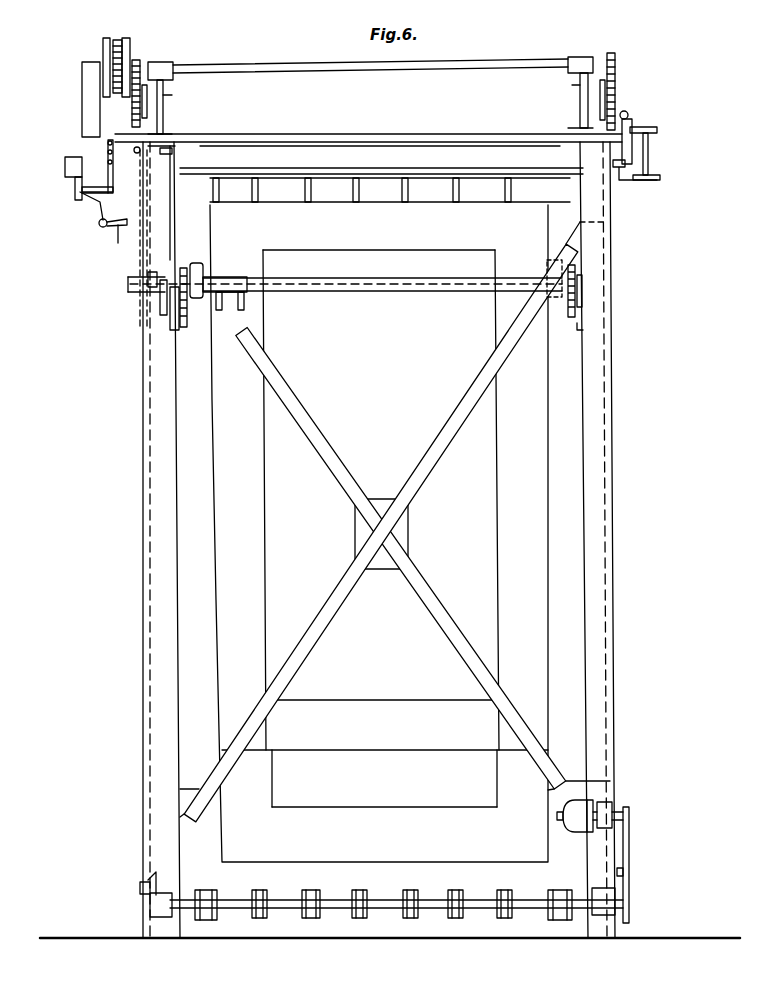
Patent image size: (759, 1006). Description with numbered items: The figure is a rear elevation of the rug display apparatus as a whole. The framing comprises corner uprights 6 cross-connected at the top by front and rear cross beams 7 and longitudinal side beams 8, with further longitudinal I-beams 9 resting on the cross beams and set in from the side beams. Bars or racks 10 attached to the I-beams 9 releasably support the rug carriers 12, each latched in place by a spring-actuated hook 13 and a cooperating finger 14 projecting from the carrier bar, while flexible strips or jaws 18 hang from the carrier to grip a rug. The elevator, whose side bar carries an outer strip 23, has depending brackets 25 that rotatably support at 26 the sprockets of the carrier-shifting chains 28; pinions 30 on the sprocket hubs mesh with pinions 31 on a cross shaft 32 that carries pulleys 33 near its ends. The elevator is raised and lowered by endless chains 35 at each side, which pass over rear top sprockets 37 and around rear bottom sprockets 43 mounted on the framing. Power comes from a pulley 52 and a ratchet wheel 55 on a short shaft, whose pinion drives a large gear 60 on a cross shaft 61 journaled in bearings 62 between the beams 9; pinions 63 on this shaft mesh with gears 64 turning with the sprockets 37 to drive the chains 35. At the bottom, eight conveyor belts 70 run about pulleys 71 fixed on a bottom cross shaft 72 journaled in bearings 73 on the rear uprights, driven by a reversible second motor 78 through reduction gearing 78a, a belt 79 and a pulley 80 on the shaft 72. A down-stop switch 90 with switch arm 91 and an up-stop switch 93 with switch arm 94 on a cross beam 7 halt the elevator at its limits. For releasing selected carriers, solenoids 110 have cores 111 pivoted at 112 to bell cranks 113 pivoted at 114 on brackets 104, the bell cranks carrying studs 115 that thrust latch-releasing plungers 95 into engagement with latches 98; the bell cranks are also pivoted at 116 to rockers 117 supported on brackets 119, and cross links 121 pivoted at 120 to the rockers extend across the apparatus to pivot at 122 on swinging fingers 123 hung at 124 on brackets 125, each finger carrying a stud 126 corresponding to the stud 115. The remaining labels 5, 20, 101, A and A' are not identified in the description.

The bracket 5 is at (82, 70).
The main uprights 6 is at (150, 521).
The front and rear cross beams 7 is at (410, 150).
The longitudinal side beams 8 is at (660, 178).
The longitudinal I-beams 9 is at (165, 130).
The bars or racks 10 is at (173, 151).
The rug carrier 12 is at (378, 178).
The spring-actuated hook 13 is at (152, 232).
The co-operating finger 14 is at (176, 196).
The flexible strips or jaws 18 is at (257, 180).
The shaft 20 is at (420, 266).
The outer strip 23 is at (151, 268).
The front and rear brackets 25 is at (166, 312).
The sprocket pivot 26 is at (175, 326).
The carrier-shifting chains 28 is at (583, 330).
The pinions 30 is at (184, 328).
The pinions 31 is at (195, 263).
The cross shaft 32 is at (230, 283).
The pulleys 33 is at (203, 273).
The endless chains 35 is at (150, 636).
The rear top sprocket 37 is at (164, 96).
The rear bottom sprocket 43 is at (150, 916).
The pulley 52 is at (105, 55).
The ratchet wheel 55 is at (118, 40).
The large gear 60 is at (130, 42).
The cross shaft 61 is at (350, 65).
The bearings 62 is at (172, 62).
The pinions 63 is at (139, 65).
The gears 64 is at (142, 100).
The conveyor belts 70 is at (262, 890).
The pulleys 71 is at (218, 910).
The bottom cross shaft 72 is at (330, 910).
The bearings 73 is at (165, 918).
The second electric motor 78 is at (578, 832).
The reduction gearing 78a is at (606, 806).
The belt 79 is at (629, 842).
The pulley 80 is at (630, 876).
The elevator down-stop switch 90 is at (140, 885).
The switch arm 91 is at (152, 876).
The up-stop switch 93 is at (150, 143).
The switch arm 94 is at (148, 200).
The latch-releasing plunger 95 is at (128, 280).
The latch 98 is at (130, 290).
The link 101 is at (118, 243).
The brackets 104 is at (101, 227).
The solenoids 110 is at (65, 165).
The solenoid core 111 is at (75, 185).
The pivot 112 is at (82, 195).
The bell crank 113 is at (97, 206).
The pivot 114 is at (120, 222).
The stud 115 is at (113, 190).
The pivot 116 is at (136, 152).
The rockers 117 is at (108, 161).
The brackets 119 is at (108, 150).
The pivot 120 is at (108, 141).
The cross link 121 is at (330, 145).
The pivot 122 is at (657, 130).
The swinging finger 123 is at (648, 155).
The pivot 124 is at (628, 113).
The bracket 125 is at (633, 128).
The stud 126 is at (626, 172).
The panel A is at (425, 533).
The panel A' is at (435, 875).